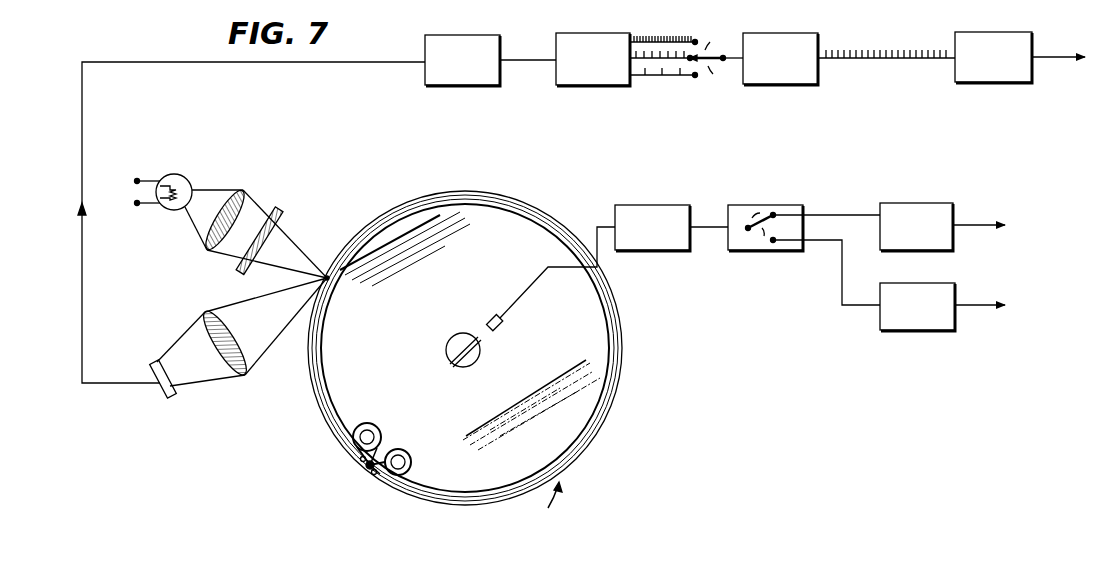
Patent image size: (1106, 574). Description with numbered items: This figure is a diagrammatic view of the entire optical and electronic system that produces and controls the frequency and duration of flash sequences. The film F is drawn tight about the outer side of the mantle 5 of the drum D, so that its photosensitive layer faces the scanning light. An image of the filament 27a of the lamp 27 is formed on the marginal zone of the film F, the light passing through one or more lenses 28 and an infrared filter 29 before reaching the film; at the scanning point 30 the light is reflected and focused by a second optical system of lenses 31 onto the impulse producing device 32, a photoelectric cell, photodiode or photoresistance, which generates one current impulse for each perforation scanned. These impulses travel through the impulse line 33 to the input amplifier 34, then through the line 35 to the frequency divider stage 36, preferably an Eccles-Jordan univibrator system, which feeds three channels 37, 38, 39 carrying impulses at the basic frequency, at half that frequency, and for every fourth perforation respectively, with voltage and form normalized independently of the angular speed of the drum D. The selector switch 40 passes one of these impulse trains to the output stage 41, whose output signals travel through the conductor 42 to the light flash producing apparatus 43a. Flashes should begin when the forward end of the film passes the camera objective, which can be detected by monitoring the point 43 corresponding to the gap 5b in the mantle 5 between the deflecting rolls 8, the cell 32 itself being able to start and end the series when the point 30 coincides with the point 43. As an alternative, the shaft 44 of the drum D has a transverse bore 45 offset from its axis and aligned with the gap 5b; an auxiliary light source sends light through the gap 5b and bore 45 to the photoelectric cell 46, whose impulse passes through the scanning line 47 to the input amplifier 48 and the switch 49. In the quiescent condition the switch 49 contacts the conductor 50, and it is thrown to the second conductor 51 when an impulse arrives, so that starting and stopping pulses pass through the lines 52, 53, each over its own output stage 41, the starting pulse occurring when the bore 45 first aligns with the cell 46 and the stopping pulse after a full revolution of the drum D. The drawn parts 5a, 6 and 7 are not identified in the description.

The mantle 5 is at (510, 210).
The film segment 5a is at (590, 420).
The gap 5b is at (375, 452).
The roller 6 is at (368, 424).
The roller 7 is at (406, 462).
The deflecting rolls 8 is at (361, 459).
The lamp 27 is at (164, 208).
The filament 27a is at (188, 180).
The lenses 28 is at (206, 244).
The infrared filter 29 is at (274, 210).
The scanning point 30 is at (324, 272).
The lenses 31 is at (233, 344).
The impulse producing device 32 is at (161, 359).
The impulse line 33 is at (270, 62).
The input amplifier 34 is at (468, 85).
The line 35 is at (524, 62).
The frequency divider stage 36 is at (602, 85).
The channel 37 is at (648, 40).
The channel 38 is at (642, 76).
The channel 39 is at (674, 70).
The selector switch 40 is at (714, 52).
The output stage 41 is at (790, 85).
The conductor 42 is at (884, 58).
The point 43 is at (368, 468).
The light flash producing apparatus 43a is at (1026, 34).
The shaft 44 is at (448, 340).
The transverse bore 45 is at (472, 364).
The photoelectric cell 46 is at (501, 318).
The scanning line 47 is at (592, 228).
The input amplifier 48 is at (658, 253).
The switch 49 is at (758, 205).
The conductor 50 is at (832, 214).
The second conductor 51 is at (842, 290).
The starting line 52 is at (974, 222).
The stopping line 53 is at (972, 308).
The film F is at (378, 222).
The drum D is at (543, 503).